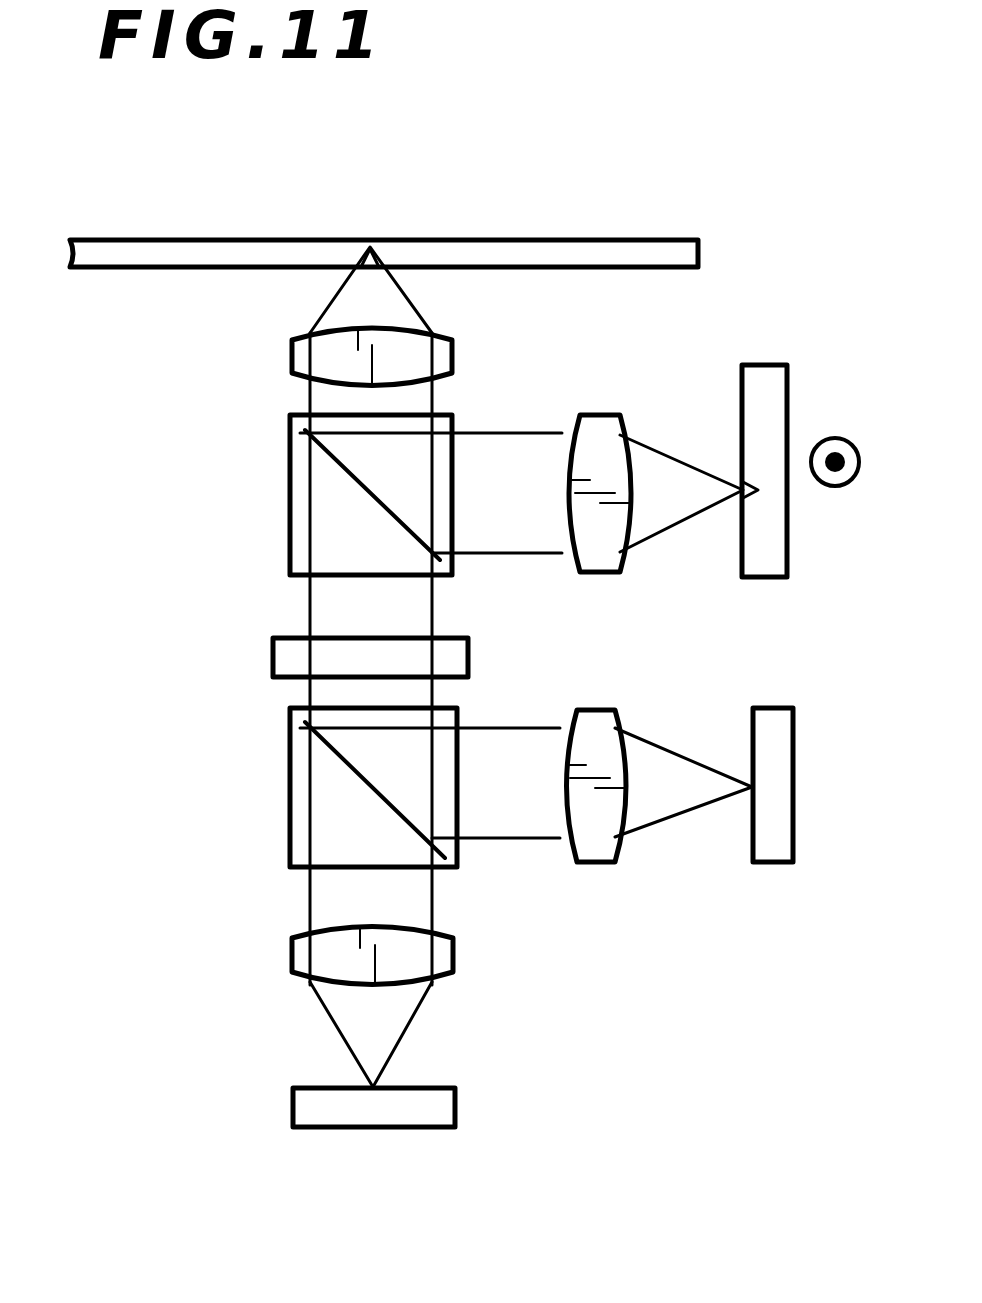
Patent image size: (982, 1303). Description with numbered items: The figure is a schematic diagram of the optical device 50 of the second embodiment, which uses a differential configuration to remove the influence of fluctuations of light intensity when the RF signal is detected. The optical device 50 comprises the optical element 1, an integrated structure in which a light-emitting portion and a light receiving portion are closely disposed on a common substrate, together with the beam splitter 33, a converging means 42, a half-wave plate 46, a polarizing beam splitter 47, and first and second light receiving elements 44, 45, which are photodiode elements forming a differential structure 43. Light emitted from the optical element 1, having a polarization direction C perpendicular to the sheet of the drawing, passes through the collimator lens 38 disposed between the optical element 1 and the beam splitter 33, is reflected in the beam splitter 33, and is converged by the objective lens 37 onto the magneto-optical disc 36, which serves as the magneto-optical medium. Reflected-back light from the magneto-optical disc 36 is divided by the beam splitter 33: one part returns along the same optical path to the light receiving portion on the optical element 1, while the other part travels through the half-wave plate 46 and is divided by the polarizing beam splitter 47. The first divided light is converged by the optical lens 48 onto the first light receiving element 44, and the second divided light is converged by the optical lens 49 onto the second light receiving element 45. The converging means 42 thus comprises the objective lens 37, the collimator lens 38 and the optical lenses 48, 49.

The optical element 1 is at (764, 385).
The polarization direction C is at (838, 437).
The beam splitter 33 is at (290, 483).
The magneto-optical disc 36 is at (522, 247).
The objective lens 37 is at (447, 356).
The collimator lens 38 is at (601, 422).
The converging means 42 is at (688, 337).
The differential structure 43 is at (545, 932).
The first light receiving element 44 is at (393, 1105).
The second light receiving element 45 is at (778, 855).
The half-wave plate 46 is at (288, 656).
The polarizing beam splitter 47 is at (300, 800).
The optical lens 48 is at (448, 960).
The optical lens 49 is at (598, 850).
The optical device 50 is at (50, 546).